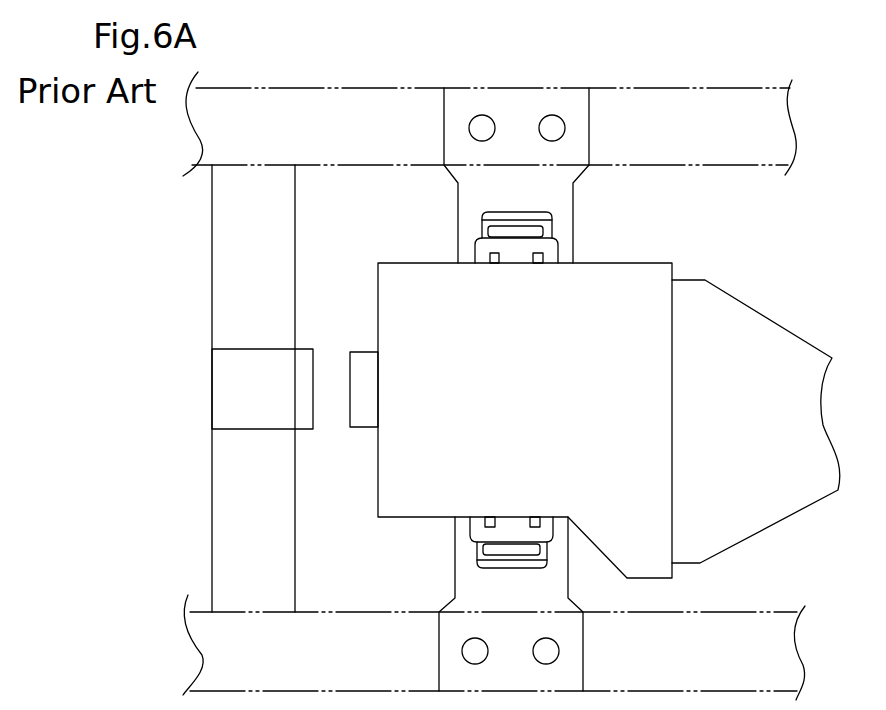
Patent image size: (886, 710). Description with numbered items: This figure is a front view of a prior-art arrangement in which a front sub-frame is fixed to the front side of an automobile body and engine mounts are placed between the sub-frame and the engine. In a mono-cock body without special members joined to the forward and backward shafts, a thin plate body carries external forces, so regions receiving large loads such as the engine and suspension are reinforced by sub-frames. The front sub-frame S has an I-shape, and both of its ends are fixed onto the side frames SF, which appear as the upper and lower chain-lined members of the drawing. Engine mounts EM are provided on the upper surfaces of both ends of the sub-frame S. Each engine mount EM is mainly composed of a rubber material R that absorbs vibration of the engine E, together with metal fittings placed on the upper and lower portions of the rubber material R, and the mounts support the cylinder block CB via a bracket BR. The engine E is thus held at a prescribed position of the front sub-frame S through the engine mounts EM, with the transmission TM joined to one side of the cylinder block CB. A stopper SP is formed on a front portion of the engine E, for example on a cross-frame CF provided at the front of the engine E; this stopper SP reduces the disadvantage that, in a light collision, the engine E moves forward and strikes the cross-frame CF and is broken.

The side frame SF is at (683, 709).
The engine mount EM is at (472, 224).
The cross-frame CF is at (296, 584).
The stopper SP is at (303, 358).
The engine E is at (400, 250).
The cylinder block CB is at (541, 408).
The transmission TM is at (790, 348).
The front sub-frame S is at (565, 218).
The rubber material R is at (540, 231).
The bracket BR is at (517, 263).